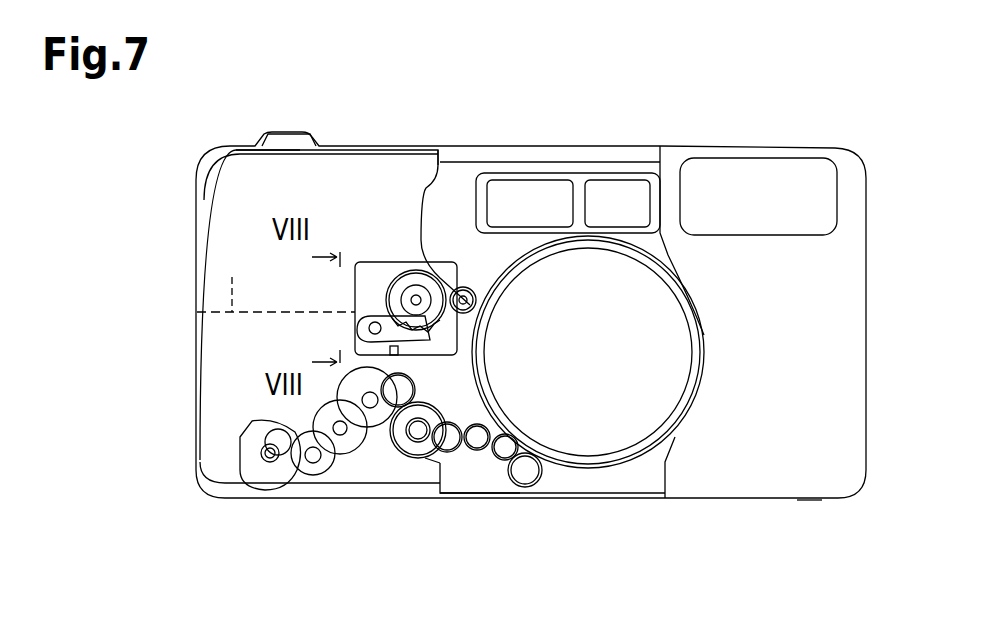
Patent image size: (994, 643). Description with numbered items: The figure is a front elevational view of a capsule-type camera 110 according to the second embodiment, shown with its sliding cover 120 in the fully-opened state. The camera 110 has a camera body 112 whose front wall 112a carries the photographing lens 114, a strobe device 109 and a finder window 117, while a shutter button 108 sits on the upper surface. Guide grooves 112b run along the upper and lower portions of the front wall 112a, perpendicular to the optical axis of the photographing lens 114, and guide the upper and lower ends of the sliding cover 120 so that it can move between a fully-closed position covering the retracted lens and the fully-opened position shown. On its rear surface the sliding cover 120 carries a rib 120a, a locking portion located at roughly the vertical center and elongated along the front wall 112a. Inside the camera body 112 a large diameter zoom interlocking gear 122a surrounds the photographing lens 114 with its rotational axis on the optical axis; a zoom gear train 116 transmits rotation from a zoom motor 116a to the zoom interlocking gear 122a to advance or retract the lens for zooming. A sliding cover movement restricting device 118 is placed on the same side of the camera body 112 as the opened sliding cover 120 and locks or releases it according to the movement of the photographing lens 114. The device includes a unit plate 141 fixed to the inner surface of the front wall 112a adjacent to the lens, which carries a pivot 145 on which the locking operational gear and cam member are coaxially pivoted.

The shutter button 108 is at (273, 133).
The strobe device 109 is at (787, 158).
The capsule-type camera 110 is at (760, 56).
The camera body 112 is at (575, 145).
The front wall 112a is at (458, 160).
The guide grooves 112b is at (507, 148).
The photographing lens 114 is at (662, 400).
The zoom gear train 116 is at (469, 464).
The zoom motor 116a is at (270, 473).
The finder window 117 is at (615, 200).
The sliding cover movement restricting device 118 is at (380, 260).
The sliding cover 120 is at (297, 148).
The rib 120a is at (276, 279).
The zoom interlocking gear 122a is at (517, 259).
The unit plate 141 is at (358, 262).
The pivot 145 is at (416, 300).